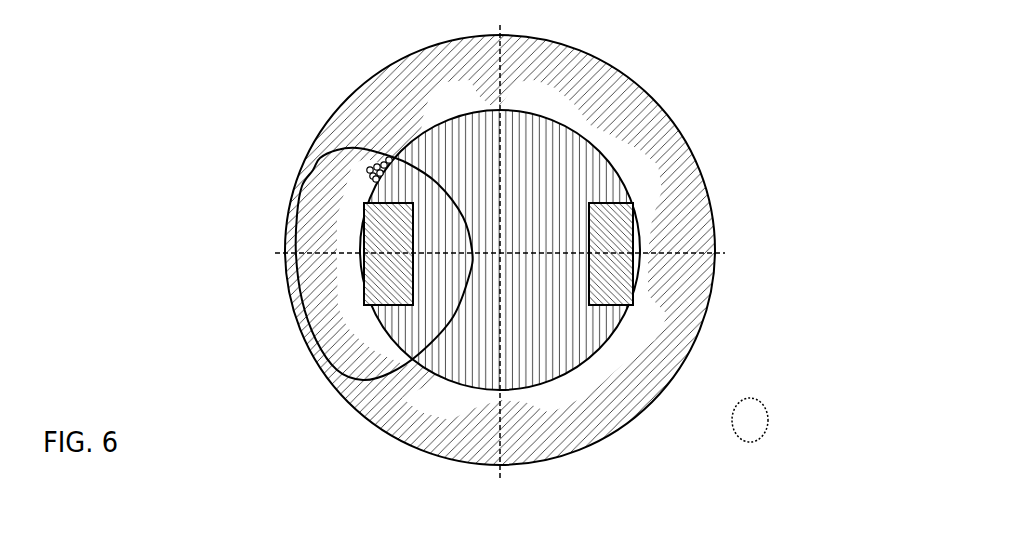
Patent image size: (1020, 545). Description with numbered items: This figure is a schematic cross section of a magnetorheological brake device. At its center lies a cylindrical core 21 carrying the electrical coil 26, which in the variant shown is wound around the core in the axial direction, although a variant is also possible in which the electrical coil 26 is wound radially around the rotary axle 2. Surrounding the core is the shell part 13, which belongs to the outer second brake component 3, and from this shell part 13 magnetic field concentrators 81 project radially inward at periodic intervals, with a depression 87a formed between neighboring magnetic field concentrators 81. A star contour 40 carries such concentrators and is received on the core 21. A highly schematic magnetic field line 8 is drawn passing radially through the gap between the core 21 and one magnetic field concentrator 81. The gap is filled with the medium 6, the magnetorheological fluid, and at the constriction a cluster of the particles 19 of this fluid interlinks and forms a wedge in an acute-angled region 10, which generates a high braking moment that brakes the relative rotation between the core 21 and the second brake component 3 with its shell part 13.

The rotary axle 2 is at (632, 185).
The second brake component 3 is at (640, 377).
The medium 6 is at (362, 323).
The magnetic field line 8 is at (320, 166).
The acute-angled region 10 is at (359, 174).
The shell part 13 is at (382, 412).
The particles 19 is at (387, 167).
The core 21 is at (520, 167).
The electrical coil 26 is at (382, 233).
The star contour 40 is at (400, 90).
The magnetic field concentrator 81 is at (613, 135).
The depression 87a is at (657, 315).